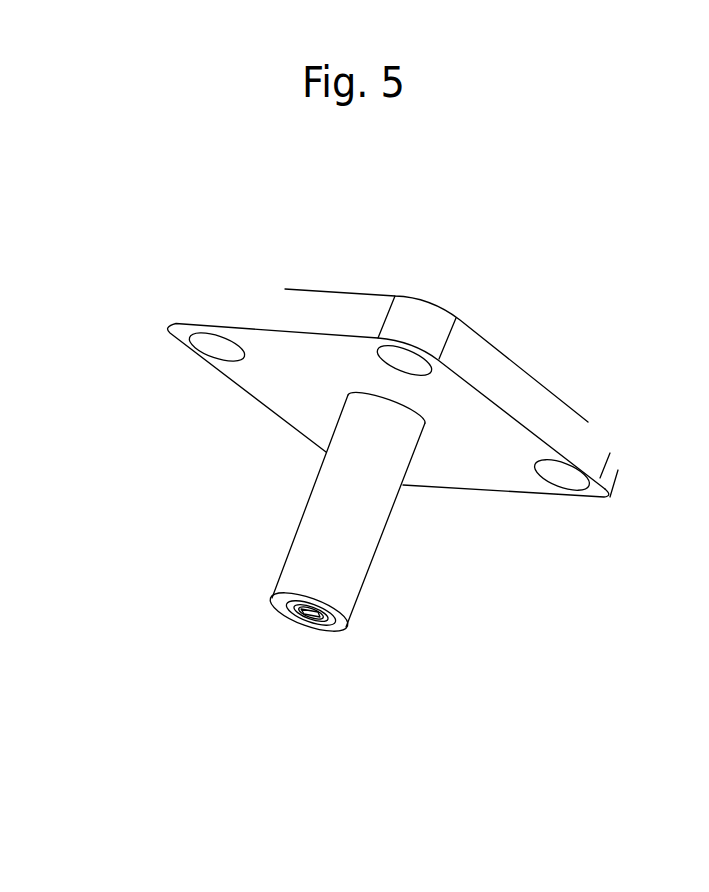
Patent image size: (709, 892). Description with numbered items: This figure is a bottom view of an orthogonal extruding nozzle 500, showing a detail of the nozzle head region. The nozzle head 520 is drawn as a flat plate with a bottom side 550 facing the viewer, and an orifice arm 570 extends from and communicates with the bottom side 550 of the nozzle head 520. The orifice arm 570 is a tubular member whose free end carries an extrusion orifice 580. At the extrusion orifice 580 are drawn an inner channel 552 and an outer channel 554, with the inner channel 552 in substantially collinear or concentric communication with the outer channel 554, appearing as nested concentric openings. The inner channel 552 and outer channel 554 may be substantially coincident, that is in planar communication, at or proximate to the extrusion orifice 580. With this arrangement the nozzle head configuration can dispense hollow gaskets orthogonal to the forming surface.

The orthogonal extruding nozzle 500 is at (473, 245).
The nozzle head 520 is at (515, 365).
The bottom side 550 is at (455, 462).
The orifice arm 570 is at (340, 515).
The extrusion orifice 580 is at (346, 630).
The outer channel 554 is at (284, 609).
The inner channel 552 is at (297, 618).